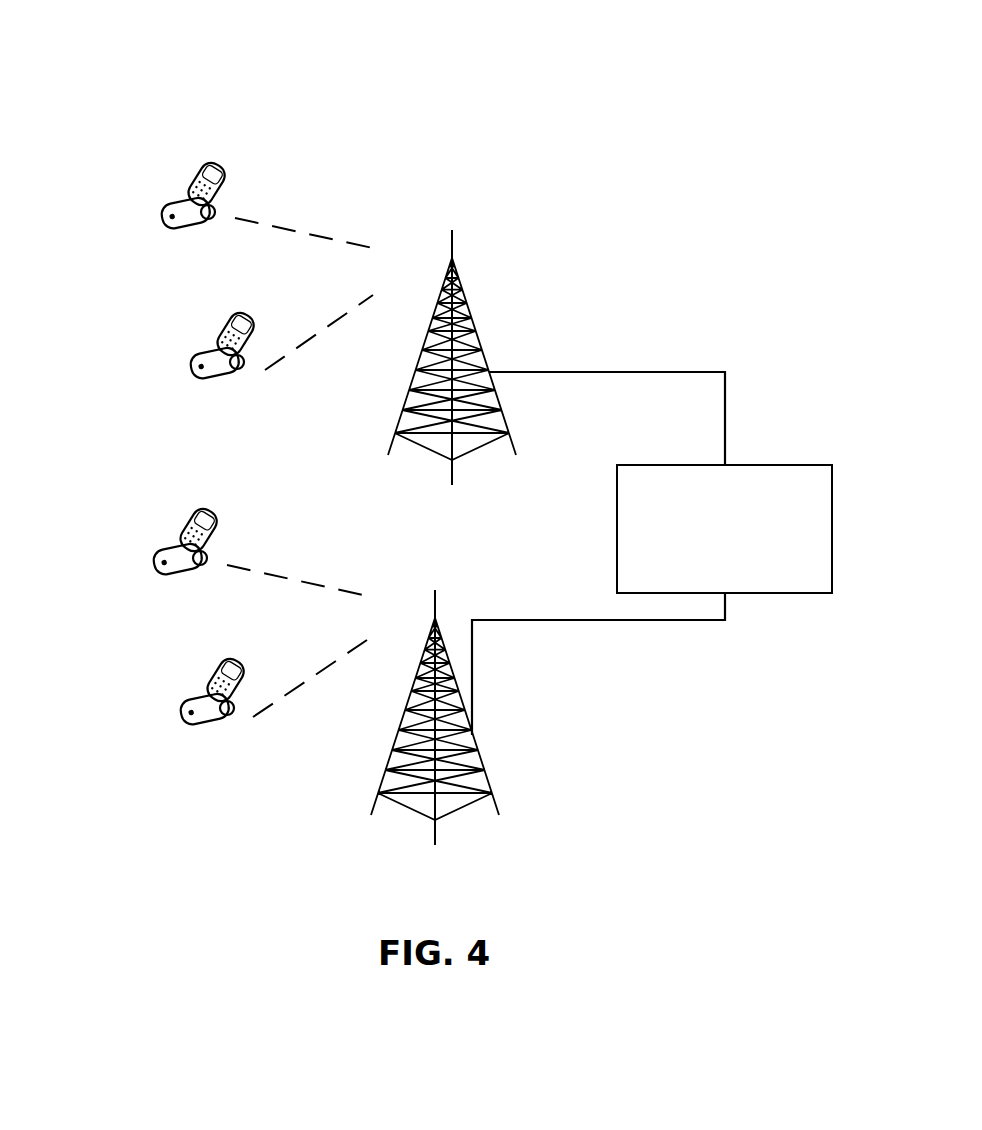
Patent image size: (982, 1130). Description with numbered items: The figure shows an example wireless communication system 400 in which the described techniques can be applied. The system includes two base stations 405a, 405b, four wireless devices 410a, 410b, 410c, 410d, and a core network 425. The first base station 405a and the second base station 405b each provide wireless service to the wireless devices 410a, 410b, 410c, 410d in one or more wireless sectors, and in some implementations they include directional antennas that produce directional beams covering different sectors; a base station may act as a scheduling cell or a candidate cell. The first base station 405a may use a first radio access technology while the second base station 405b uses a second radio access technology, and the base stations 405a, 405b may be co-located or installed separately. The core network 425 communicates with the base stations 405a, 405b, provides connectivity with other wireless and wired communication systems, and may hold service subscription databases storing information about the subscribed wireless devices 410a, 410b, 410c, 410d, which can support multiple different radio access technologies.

The wireless communication system 400 is at (583, 80).
The first base station 405a is at (469, 313).
The second base station 405b is at (440, 622).
The wireless device 410a is at (195, 172).
The wireless device 410b is at (225, 319).
The wireless device 410c is at (135, 538).
The wireless device 410d is at (217, 667).
The core network 425 is at (641, 465).